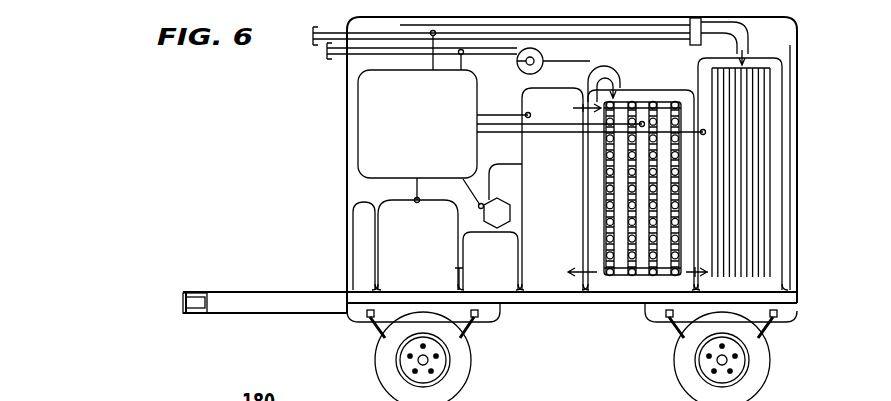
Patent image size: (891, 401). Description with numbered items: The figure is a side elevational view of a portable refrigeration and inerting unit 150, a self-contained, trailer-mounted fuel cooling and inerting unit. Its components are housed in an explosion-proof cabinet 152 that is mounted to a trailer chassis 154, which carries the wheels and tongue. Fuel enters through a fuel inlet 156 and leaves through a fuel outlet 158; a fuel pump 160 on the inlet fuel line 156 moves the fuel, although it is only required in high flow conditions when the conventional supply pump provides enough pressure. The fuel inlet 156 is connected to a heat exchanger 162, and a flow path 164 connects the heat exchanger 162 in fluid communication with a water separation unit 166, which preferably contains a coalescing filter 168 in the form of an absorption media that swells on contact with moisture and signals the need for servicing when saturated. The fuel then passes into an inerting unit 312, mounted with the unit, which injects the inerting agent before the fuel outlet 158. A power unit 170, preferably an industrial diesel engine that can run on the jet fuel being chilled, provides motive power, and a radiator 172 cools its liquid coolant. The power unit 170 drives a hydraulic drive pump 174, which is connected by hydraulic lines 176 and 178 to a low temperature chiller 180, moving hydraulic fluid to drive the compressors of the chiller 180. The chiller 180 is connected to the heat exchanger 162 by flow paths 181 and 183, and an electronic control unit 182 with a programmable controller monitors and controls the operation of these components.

The portable refrigeration and inerting unit 150 is at (810, 121).
The explosion-proof cabinet 152 is at (799, 184).
The trailer chassis 154 is at (261, 297).
The fuel inlet 156 is at (330, 58).
The fuel outlet 158 is at (316, 42).
The fuel pump 160 is at (521, 68).
The heat exchanger 162 is at (644, 100).
The flow path 164 is at (690, 278).
The water separation unit 166 is at (783, 217).
The coalescing filter 168 is at (760, 252).
The power unit 170 is at (388, 208).
The radiator 172 is at (362, 248).
The hydraulic drive pump 174 is at (500, 281).
The hydraulic line 176 is at (512, 192).
The hydraulic line 178 is at (514, 164).
The low temperature chiller 180 is at (541, 280).
The flow path 181 is at (601, 67).
The electronic control unit 182 is at (363, 112).
The flow path 183 is at (596, 275).
The inerting unit 312 is at (741, 30).